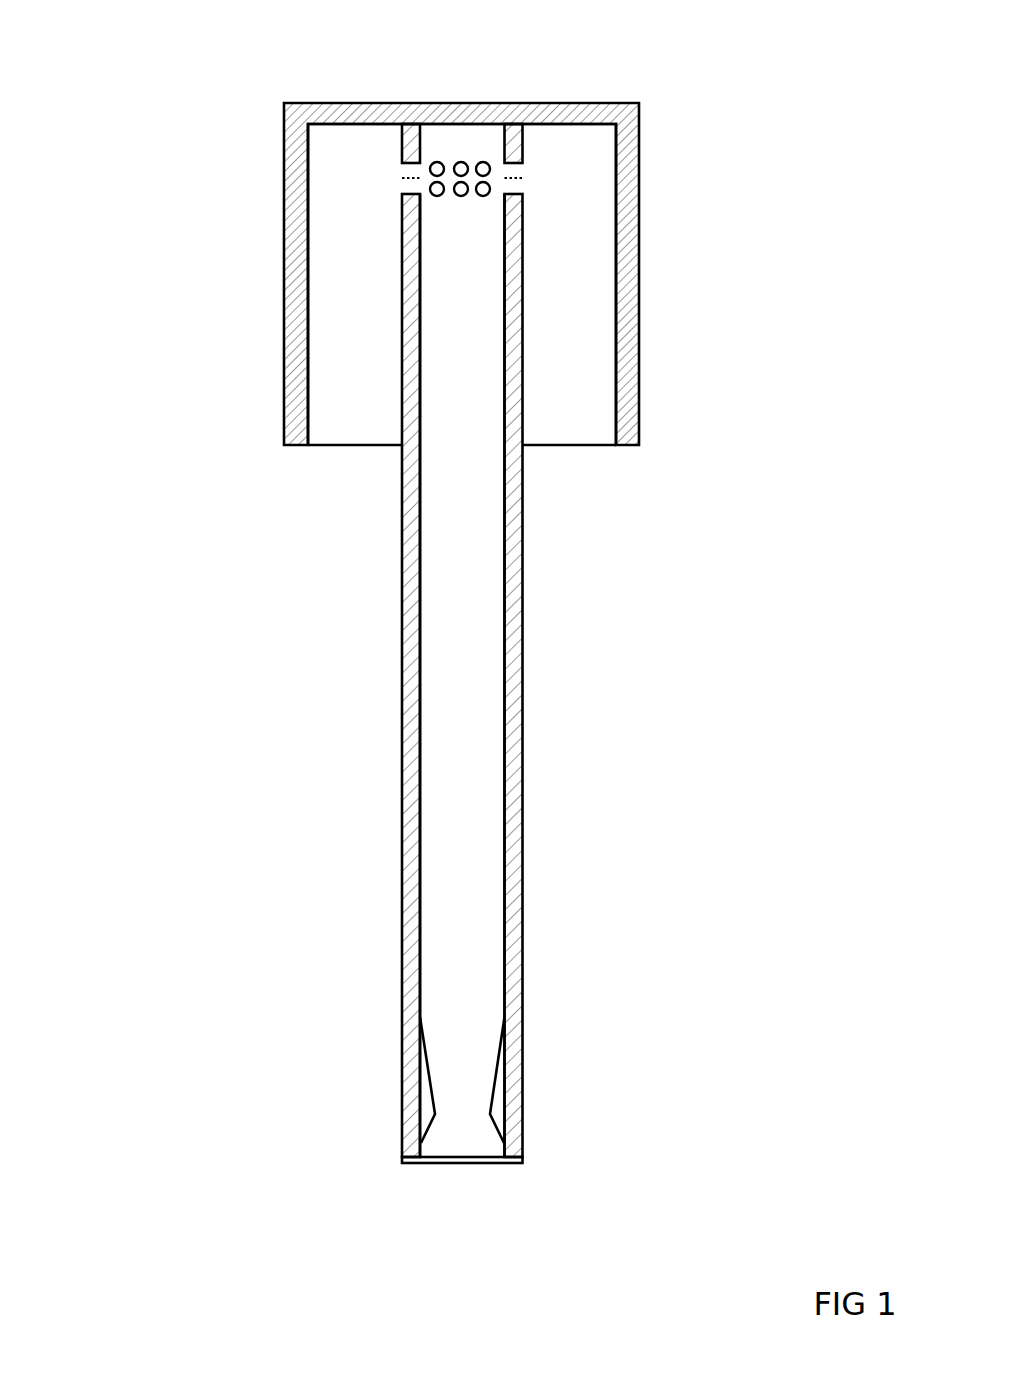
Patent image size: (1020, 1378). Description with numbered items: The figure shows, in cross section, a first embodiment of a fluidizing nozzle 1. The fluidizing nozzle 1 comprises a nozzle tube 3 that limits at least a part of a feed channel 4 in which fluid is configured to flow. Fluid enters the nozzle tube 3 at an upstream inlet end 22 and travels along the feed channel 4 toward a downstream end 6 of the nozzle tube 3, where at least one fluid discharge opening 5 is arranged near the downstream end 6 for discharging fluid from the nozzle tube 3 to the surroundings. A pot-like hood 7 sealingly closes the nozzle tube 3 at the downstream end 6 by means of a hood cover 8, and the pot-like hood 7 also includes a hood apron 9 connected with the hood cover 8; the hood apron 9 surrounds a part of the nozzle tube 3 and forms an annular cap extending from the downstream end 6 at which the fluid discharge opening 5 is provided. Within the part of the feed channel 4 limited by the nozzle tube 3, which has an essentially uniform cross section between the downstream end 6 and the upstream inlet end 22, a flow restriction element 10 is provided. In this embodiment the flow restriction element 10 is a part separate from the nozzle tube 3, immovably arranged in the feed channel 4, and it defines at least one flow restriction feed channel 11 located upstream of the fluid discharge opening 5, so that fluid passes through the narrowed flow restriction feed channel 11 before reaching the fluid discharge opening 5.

The fluidizing nozzle 1 is at (206, 60).
The nozzle tube 3 is at (410, 693).
The feed channel 4 is at (485, 832).
The fluid discharge opening 5 is at (483, 163).
The downstream end 6 is at (557, 160).
The pot-like hood 7 is at (207, 248).
The hood cover 8 is at (400, 112).
The hood apron 9 is at (293, 343).
The flow restriction element 10 is at (427, 1108).
The flow restriction feed channel 11 is at (463, 1067).
The upstream inlet end 22 is at (498, 1177).